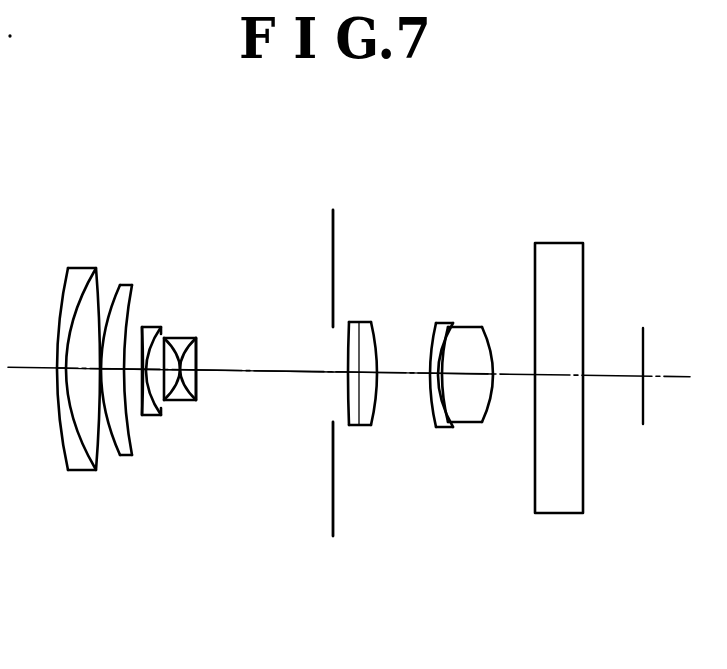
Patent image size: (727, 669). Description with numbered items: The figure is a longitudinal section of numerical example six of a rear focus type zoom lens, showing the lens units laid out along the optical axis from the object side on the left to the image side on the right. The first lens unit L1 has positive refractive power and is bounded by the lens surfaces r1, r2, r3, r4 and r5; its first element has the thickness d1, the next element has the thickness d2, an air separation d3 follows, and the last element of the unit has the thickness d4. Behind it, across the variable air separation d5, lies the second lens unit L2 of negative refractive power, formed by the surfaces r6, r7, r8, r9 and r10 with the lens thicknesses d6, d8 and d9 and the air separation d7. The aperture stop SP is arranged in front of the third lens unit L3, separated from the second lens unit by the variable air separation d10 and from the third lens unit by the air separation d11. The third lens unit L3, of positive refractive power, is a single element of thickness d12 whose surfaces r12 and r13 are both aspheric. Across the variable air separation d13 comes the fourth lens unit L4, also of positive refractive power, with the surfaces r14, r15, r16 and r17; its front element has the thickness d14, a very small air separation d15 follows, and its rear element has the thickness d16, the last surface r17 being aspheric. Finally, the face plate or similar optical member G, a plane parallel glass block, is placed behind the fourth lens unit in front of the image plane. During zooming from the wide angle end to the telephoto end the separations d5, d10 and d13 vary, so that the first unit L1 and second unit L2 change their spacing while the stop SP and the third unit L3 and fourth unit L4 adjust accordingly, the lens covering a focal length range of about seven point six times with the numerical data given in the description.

The first lens unit L1 is at (88, 348).
The second lens unit L2 is at (188, 368).
The third lens unit L3 is at (381, 385).
The fourth lens unit L4 is at (474, 368).
The aperture stop SP is at (333, 247).
The face plate G is at (568, 241).
The first lens surface r1 is at (57, 362).
The second lens surface r2 is at (79, 305).
The third lens surface r3 is at (98, 310).
The fourth lens surface r4 is at (109, 322).
The fifth lens surface r5 is at (129, 300).
The sixth lens surface r6 is at (143, 327).
The seventh lens surface r7 is at (161, 330).
The eighth lens surface r8 is at (165, 340).
The ninth lens surface r9 is at (185, 340).
The tenth lens surface r10 is at (196, 340).
The twelfth lens surface r12 is at (349, 323).
The thirteenth lens surface r13 is at (375, 326).
The fourteenth lens surface r14 is at (430, 332).
The fifteenth lens surface r15 is at (446, 324).
The sixteenth lens surface r16 is at (474, 328).
The seventeenth lens surface r17 is at (488, 336).
The first lens thickness d1 is at (58, 374).
The second lens thickness d2 is at (94, 462).
The third air separation d3 is at (114, 455).
The fourth lens thickness d4 is at (129, 453).
The fifth air separation d5 is at (138, 418).
The sixth lens thickness d6 is at (151, 416).
The seventh air separation d7 is at (163, 405).
The eighth lens thickness d8 is at (180, 402).
The ninth lens thickness d9 is at (194, 402).
The tenth air separation d10 is at (263, 376).
The eleventh air separation d11 is at (341, 377).
The twelfth lens thickness d12 is at (359, 425).
The thirteenth air separation d13 is at (412, 376).
The fourteenth lens thickness d14 is at (452, 427).
The fifteenth air separation d15 is at (455, 425).
The sixteenth lens thickness d16 is at (482, 423).